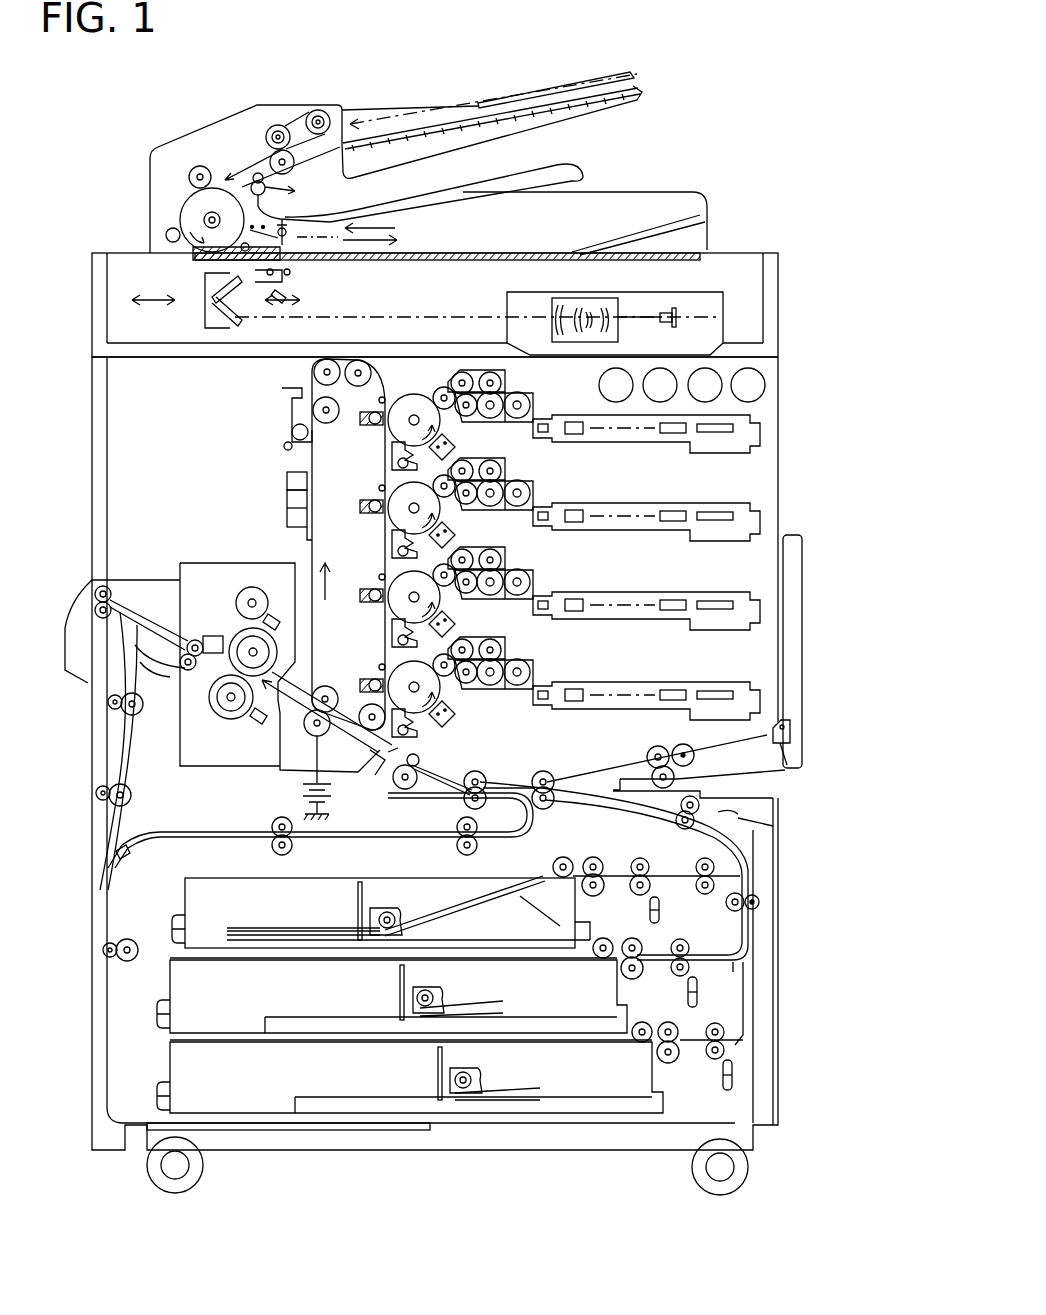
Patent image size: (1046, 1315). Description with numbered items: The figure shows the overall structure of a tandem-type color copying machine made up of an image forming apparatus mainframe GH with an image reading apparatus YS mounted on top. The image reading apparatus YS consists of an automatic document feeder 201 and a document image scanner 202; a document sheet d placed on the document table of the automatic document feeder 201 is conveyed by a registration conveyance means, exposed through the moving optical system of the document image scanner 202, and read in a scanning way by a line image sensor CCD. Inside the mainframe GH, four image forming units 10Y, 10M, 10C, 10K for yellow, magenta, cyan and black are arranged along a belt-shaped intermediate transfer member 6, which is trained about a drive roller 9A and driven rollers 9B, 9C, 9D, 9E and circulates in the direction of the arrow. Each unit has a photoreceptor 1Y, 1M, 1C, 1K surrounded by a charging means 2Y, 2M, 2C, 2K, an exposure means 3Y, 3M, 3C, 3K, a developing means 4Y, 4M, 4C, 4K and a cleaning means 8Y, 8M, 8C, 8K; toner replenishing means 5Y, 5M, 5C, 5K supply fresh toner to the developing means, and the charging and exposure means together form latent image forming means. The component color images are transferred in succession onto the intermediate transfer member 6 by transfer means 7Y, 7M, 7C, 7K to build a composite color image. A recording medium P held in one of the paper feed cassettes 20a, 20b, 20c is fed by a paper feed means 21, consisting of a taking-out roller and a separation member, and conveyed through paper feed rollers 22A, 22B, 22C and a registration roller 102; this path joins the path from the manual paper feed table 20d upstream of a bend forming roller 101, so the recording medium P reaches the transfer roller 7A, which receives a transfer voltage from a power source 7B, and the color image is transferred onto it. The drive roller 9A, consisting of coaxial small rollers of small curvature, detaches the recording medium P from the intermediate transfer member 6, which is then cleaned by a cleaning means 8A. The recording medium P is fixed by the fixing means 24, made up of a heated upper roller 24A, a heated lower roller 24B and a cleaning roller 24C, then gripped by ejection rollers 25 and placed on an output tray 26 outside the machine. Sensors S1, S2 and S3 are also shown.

The document sheet d is at (507, 102).
The automatic document feeder 201 is at (607, 120).
The image reading apparatus YS is at (713, 185).
The document image scanner 202 is at (747, 246).
The image forming apparatus mainframe GH is at (138, 386).
The line image sensor CCD is at (684, 305).
The drive roller 9A is at (330, 716).
The driven roller 9B is at (315, 402).
The driven roller 9C is at (334, 360).
The driven roller 9D is at (362, 360).
The driven roller 9E is at (378, 766).
The intermediate transfer member 6 is at (310, 460).
The cleaning means 8A is at (290, 428).
The sensor S1 is at (213, 636).
The sensor S2 is at (287, 526).
The sensor S3 is at (287, 490).
The image forming unit 10Y is at (543, 430).
The image forming unit 10M is at (545, 511).
The image forming unit 10C is at (542, 590).
The image forming unit 10K is at (541, 686).
The photoreceptor 1Y is at (400, 410).
The photoreceptor 1M is at (396, 494).
The photoreceptor 1C is at (396, 584).
The photoreceptor 1K is at (396, 672).
The charging means 2Y is at (449, 449).
The charging means 2M is at (449, 539).
The charging means 2C is at (449, 629).
The charging means 2K is at (460, 716).
The exposure means 3Y is at (643, 445).
The exposure means 3M is at (640, 532).
The exposure means 3C is at (710, 592).
The exposure means 3K is at (657, 682).
The developing means 4Y is at (449, 375).
The developing means 4M is at (508, 478).
The developing means 4C is at (506, 568).
The developing means 4K is at (505, 658).
The toner replenishing means 5Y is at (616, 385).
The toner replenishing means 5M is at (660, 385).
The toner replenishing means 5C is at (705, 385).
The toner replenishing means 5K is at (748, 385).
The transfer means 7Y is at (362, 428).
The transfer means 7M is at (368, 522).
The transfer means 7C is at (362, 600).
The transfer means 7K is at (364, 681).
The cleaning means 8Y is at (392, 466).
The cleaning means 8M is at (392, 556).
The cleaning means 8C is at (392, 632).
The cleaning means 8K is at (418, 735).
The transfer roller 7A is at (310, 732).
The power source 7B is at (303, 789).
The fixing means 24 is at (262, 635).
The upper roller 24A is at (185, 665).
The lower roller 24B is at (230, 720).
The cleaning roller 24C is at (251, 588).
The ejection rollers 25 is at (112, 596).
The output tray 26 is at (92, 592).
The bend forming roller 101 is at (464, 796).
The registration roller 102 is at (428, 832).
The paper feed roller 22A is at (703, 858).
The paper feed roller 22B is at (680, 820).
The paper feed roller 22C is at (552, 806).
The paper feed means 21 is at (590, 855).
The recording medium P is at (303, 928).
The paper feed cassette 20a is at (415, 912).
The paper feed cassette 20b is at (620, 990).
The paper feed cassette 20c is at (655, 1075).
The manual paper feed table 20d is at (783, 660).